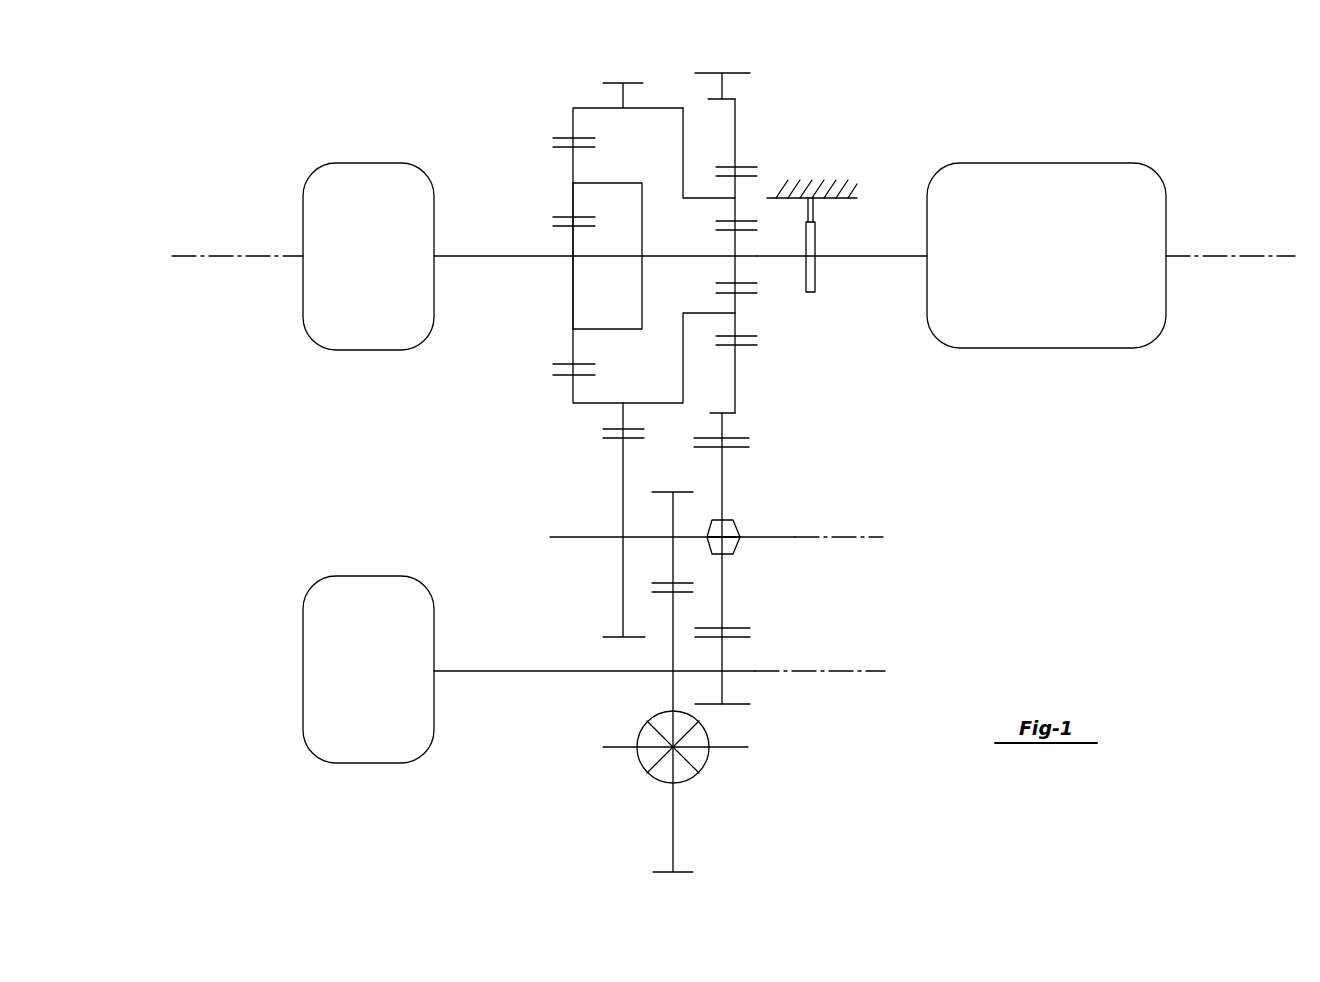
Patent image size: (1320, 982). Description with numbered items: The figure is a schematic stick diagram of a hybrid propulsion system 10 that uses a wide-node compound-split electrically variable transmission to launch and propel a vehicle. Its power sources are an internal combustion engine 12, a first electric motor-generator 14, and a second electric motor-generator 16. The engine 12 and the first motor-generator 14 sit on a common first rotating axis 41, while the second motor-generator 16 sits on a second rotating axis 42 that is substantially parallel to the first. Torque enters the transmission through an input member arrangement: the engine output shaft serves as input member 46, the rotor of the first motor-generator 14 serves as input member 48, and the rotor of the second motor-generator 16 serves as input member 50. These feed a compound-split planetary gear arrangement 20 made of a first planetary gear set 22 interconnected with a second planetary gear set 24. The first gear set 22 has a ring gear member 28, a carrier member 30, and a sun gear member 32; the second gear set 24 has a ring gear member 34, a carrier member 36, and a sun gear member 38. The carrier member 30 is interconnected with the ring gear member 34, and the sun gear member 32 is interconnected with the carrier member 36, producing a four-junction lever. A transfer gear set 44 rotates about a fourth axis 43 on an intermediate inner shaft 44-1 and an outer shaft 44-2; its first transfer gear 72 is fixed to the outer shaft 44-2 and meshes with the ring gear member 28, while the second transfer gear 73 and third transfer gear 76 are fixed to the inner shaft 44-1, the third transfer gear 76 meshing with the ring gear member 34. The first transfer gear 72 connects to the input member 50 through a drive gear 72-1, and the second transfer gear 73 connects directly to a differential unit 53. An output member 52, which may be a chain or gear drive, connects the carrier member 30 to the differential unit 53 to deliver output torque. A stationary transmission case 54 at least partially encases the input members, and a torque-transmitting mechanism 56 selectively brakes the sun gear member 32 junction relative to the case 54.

The hybrid propulsion system 10 is at (1058, 126).
The internal combustion engine 12 is at (1034, 270).
The first electric motor-generator 14 is at (356, 269).
The second electric motor-generator 16 is at (356, 683).
The compound-split planetary gear arrangement 20 is at (668, 64).
The first planetary gear set 22 is at (774, 297).
The second planetary gear set 24 is at (522, 321).
The ring gear member 28 is at (738, 97).
The carrier member 30 is at (703, 200).
The sun gear member 32 is at (742, 240).
The ring gear member 34 is at (587, 108).
The carrier member 36 is at (618, 329).
The sun gear member 38 is at (557, 240).
The first rotating axis 41 is at (218, 256).
The second rotating axis 42 is at (823, 671).
The fourth axis 43 is at (867, 537).
The transfer gear set 44 is at (786, 532).
The intermediate inner shaft 44-1 is at (740, 550).
The outer shaft 44-2 is at (740, 522).
The input member 46 is at (893, 256).
The input member 48 is at (470, 256).
The input member 50 is at (472, 671).
The output member 52 is at (623, 421).
The differential unit 53 is at (662, 782).
The transmission case 54 is at (826, 190).
The torque-transmitting mechanism 56 is at (815, 275).
The first transfer gear 72 is at (745, 447).
The drive gear 72-1 is at (733, 704).
The second transfer gear 73 is at (678, 492).
The third transfer gear 76 is at (613, 438).